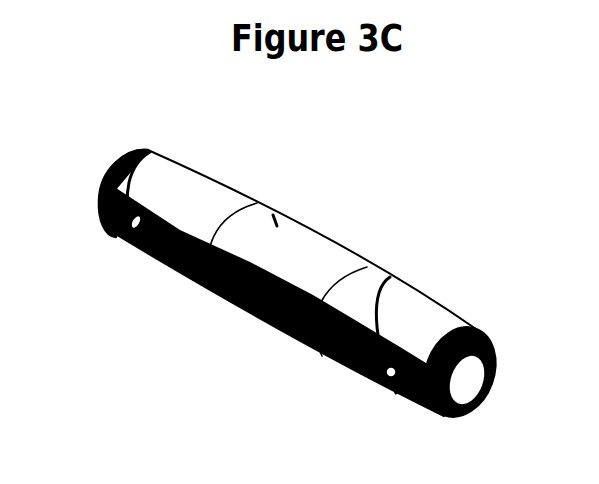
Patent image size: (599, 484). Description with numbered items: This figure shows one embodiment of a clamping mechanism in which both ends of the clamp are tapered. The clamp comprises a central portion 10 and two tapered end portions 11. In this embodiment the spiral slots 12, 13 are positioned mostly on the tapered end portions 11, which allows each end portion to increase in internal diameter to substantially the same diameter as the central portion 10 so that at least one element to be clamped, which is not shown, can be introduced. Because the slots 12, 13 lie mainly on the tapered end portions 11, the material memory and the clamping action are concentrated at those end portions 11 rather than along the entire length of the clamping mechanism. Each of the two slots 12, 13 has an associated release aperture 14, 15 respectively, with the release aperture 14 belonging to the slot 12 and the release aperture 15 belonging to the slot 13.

The central portion 10 is at (313, 241).
The tapered end portions 11 is at (197, 173).
The spiral slot 12 is at (113, 230).
The spiral slot 13 is at (392, 278).
The release aperture 14 is at (140, 240).
The release aperture 15 is at (390, 380).